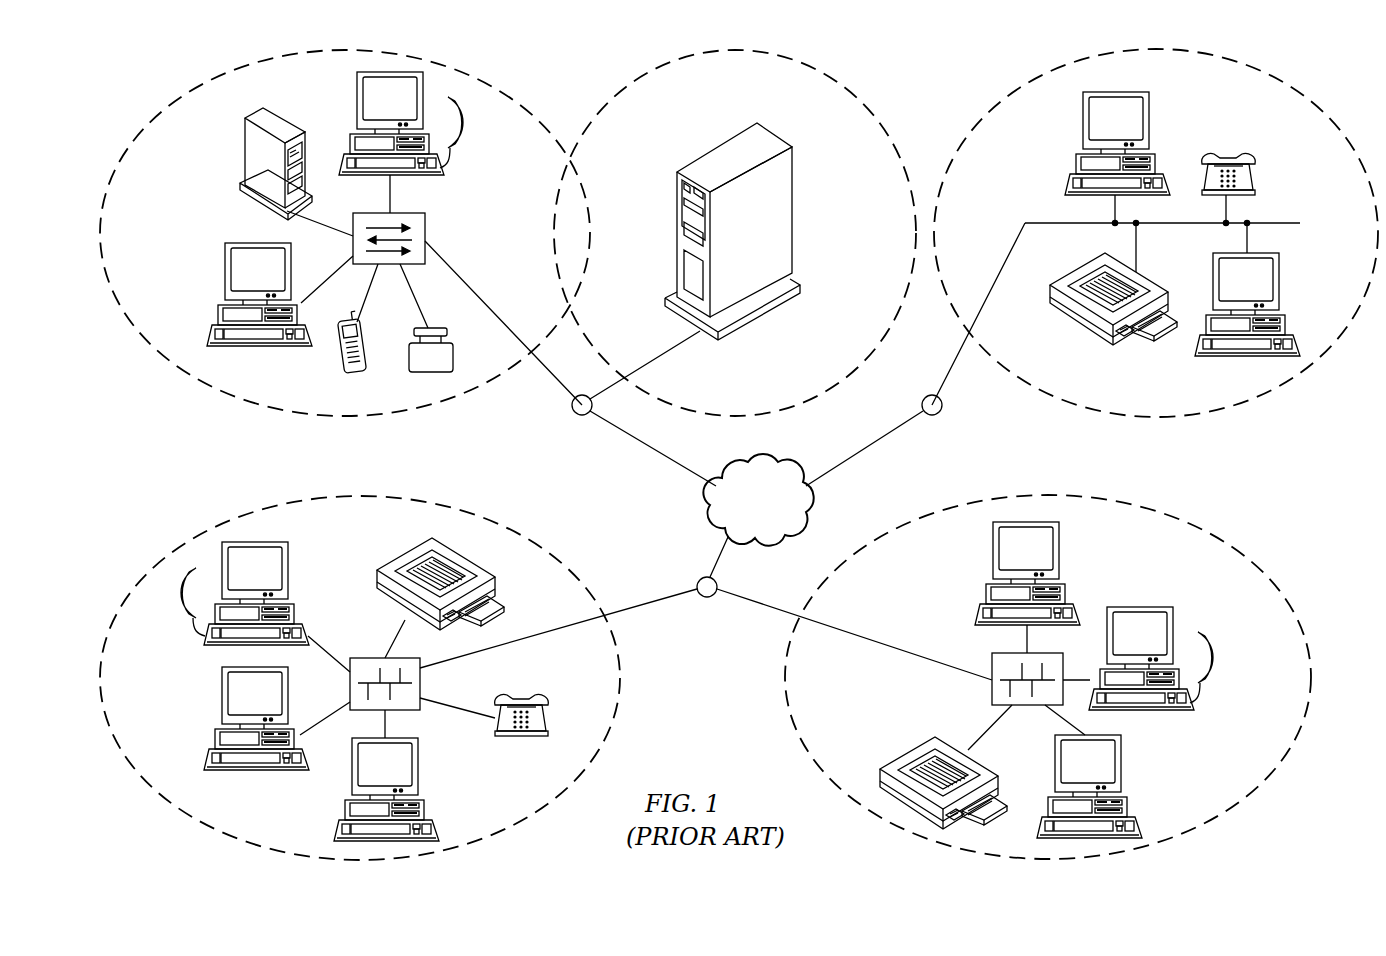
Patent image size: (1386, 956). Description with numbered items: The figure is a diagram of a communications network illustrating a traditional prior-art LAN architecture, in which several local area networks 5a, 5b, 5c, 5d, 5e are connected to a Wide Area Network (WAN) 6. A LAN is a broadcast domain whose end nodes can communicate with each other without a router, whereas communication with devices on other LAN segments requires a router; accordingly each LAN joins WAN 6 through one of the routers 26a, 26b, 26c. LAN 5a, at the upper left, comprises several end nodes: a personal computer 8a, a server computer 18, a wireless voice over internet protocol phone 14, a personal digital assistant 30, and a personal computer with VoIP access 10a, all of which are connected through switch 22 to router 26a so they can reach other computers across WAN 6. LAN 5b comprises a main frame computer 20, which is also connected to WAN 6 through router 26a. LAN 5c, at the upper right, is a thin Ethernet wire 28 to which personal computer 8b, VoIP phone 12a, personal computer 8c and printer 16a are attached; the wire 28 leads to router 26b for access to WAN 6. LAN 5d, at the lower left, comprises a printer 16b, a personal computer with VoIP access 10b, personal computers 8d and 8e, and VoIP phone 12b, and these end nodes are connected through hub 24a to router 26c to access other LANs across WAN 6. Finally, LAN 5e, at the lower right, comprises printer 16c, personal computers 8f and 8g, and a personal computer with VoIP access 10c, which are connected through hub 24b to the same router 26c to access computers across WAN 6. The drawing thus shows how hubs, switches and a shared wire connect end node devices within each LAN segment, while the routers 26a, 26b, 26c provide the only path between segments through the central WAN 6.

The LAN 5a is at (185, 106).
The LAN 5b is at (858, 104).
The LAN 5c is at (1298, 90).
The LAN 5d is at (195, 825).
The LAN 5e is at (1248, 798).
The Wide Area Network (WAN) 6 is at (766, 513).
The personal computer 8a is at (245, 243).
The personal computer 8b is at (1083, 118).
The personal computer 8c is at (1280, 282).
The personal computer 8d is at (255, 772).
The personal computer 8e is at (418, 765).
The personal computer 8f is at (1122, 762).
The personal computer 8g is at (993, 548).
The personal computer with VoIP access 10a is at (357, 100).
The personal computer with VoIP access 10b is at (290, 572).
The personal computer with VoIP access 10c is at (1140, 607).
The VoIP phone 12a is at (1228, 152).
The VoIP phone 12b is at (522, 736).
The wireless VoIP phone 14 is at (340, 360).
The printer 16a is at (1082, 330).
The printer 16b is at (500, 578).
The printer 16c is at (908, 755).
The server computer 18 is at (250, 162).
The main frame computer 20 is at (762, 135).
The switch 22 is at (425, 222).
The hub 24a is at (365, 658).
The hub 24b is at (992, 692).
The router 26a is at (575, 415).
The router 26b is at (940, 415).
The router 26c is at (705, 597).
The thin Ethernet wire 28 is at (1278, 222).
The personal digital assistant 30 is at (453, 363).